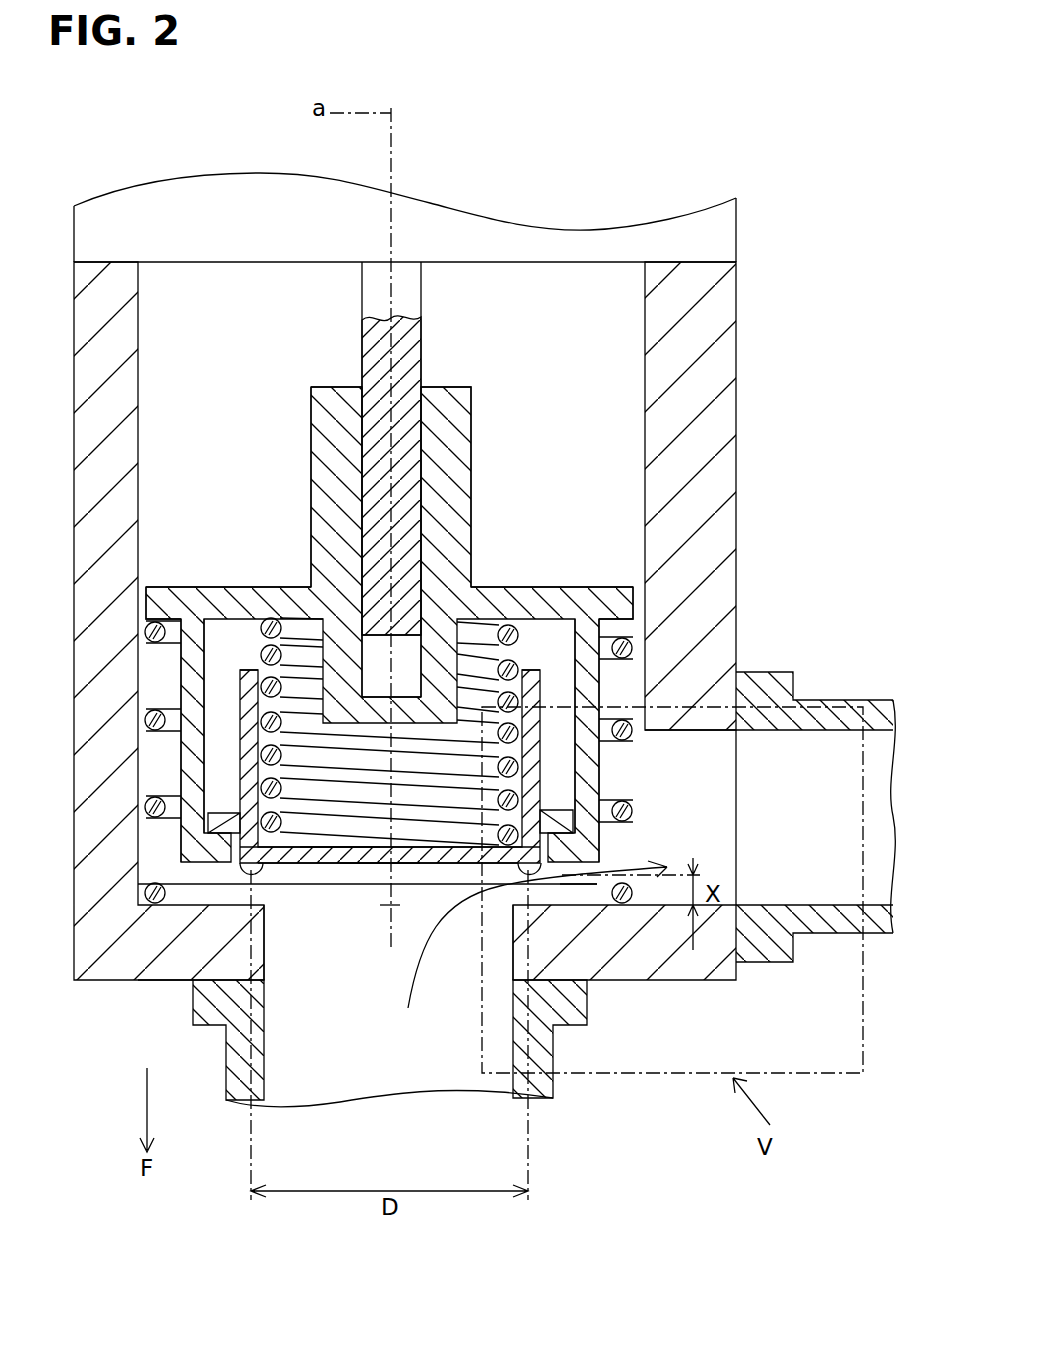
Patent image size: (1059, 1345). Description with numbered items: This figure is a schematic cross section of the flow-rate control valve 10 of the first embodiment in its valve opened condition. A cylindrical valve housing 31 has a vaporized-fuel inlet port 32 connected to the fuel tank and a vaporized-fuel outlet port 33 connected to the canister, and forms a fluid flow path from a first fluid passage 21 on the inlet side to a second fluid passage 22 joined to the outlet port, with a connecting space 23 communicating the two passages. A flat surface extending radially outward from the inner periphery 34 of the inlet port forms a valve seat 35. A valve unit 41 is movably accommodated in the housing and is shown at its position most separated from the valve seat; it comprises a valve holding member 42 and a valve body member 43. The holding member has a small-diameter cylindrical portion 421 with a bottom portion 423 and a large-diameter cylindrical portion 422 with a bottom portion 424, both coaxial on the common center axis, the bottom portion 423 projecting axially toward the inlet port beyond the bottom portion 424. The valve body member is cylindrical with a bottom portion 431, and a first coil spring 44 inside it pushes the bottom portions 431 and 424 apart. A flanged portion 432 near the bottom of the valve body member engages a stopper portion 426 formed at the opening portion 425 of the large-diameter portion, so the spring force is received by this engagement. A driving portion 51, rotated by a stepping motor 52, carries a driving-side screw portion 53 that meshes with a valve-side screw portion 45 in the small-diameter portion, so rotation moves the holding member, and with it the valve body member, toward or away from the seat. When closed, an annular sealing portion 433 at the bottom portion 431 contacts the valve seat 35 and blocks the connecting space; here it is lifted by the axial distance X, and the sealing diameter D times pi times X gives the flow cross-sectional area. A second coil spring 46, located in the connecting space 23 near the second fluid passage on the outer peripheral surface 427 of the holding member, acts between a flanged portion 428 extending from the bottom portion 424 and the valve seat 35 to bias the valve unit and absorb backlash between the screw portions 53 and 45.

The flow-rate control valve 10 is at (587, 193).
The first fluid passage 21 is at (395, 930).
The second fluid passage 22 is at (657, 887).
The connecting space 23 is at (610, 873).
The valve housing 31 is at (103, 303).
The vaporized-fuel inlet port 32 is at (283, 1057).
The vaporized-fuel outlet port 33 is at (850, 760).
The inner periphery 34 is at (312, 905).
The valve seat 35 is at (92, 960).
The valve unit 41 is at (173, 577).
The valve holding member 42 is at (192, 662).
The valve body member 43 is at (248, 700).
The first coil spring 44 is at (181, 768).
The valve-side screw portion 45 is at (355, 492).
The second coil spring 46 is at (160, 732).
The driving portion 51 is at (370, 358).
The stepping motor 52 is at (95, 242).
The driving-side screw portion 53 is at (357, 447).
The small-diameter cylindrical portion 421 is at (320, 411).
The large-diameter cylindrical portion 422 is at (180, 587).
The bottom portion 423 is at (370, 868).
The bottom portion 424 is at (250, 602).
The opening portion 425 is at (235, 872).
The stopper portion 426 is at (232, 851).
The outer peripheral surface 427 is at (243, 680).
The flanged portion 428 is at (150, 618).
The bottom portion 431 is at (343, 862).
The flanged portion 432 is at (208, 823).
The sealing portion 433 is at (173, 980).